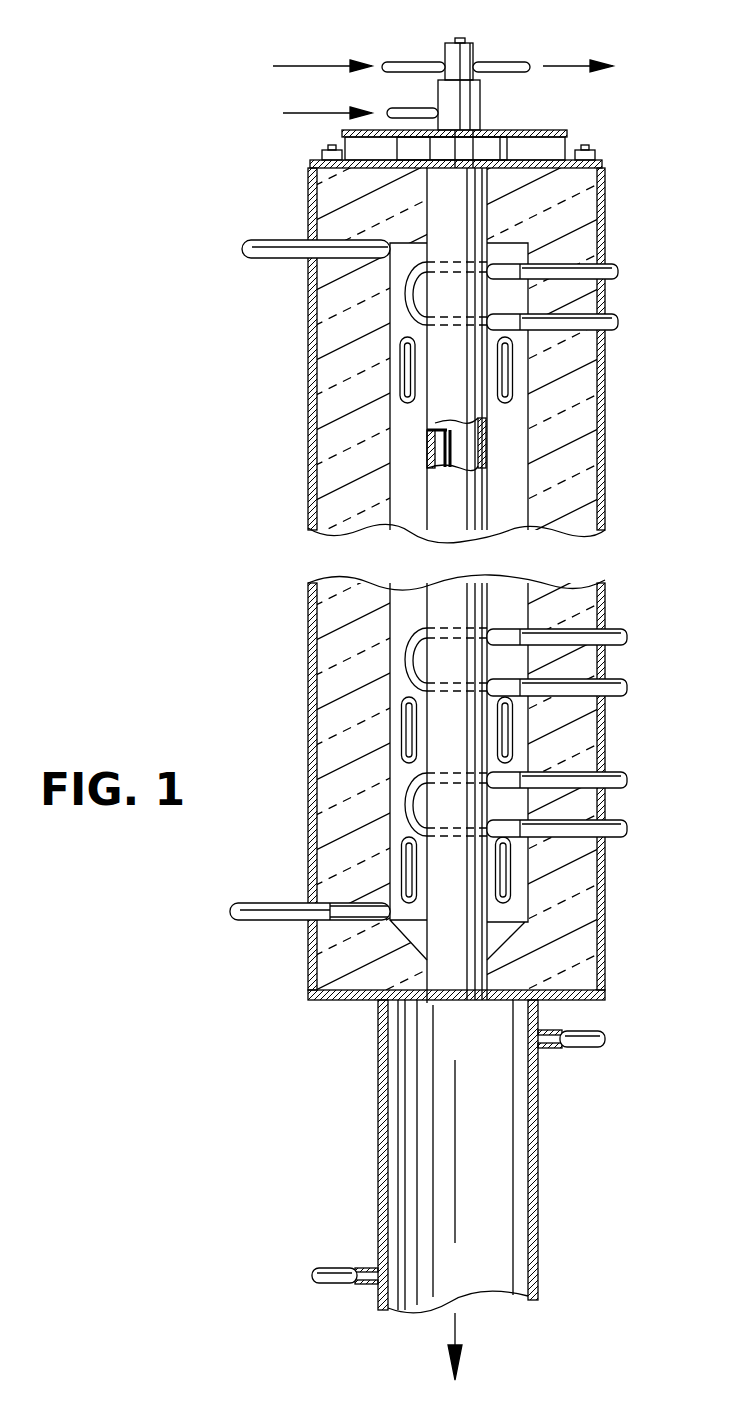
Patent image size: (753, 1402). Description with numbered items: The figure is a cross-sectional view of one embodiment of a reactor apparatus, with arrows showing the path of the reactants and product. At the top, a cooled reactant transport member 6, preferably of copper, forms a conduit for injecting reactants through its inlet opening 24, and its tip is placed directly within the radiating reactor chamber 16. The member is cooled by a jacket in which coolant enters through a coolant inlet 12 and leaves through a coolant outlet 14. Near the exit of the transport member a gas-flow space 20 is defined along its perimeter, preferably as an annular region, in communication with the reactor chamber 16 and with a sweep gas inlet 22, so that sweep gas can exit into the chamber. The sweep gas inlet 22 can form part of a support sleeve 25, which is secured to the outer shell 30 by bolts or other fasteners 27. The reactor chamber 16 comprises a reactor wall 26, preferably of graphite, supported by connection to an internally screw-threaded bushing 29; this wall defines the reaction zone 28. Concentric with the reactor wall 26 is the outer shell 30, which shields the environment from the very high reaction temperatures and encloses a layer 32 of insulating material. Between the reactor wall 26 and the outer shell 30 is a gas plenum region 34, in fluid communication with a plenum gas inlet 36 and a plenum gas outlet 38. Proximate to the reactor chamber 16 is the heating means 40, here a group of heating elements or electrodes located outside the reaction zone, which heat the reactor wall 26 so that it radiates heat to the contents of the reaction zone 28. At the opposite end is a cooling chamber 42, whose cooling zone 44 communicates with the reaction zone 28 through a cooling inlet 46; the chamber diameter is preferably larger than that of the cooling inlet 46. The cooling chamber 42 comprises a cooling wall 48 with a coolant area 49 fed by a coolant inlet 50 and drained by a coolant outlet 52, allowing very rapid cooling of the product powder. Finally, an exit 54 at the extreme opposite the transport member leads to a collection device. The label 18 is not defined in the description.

The reactant transport member 6 is at (455, 40).
The inlet opening 24 is at (465, 42).
The coolant inlet 12 is at (397, 60).
The coolant outlet 14 is at (517, 62).
The sweep gas inlet 22 is at (407, 108).
The internally screw-threaded bushing 29 is at (397, 153).
The support sleeve 25 is at (483, 147).
The fasteners 27 is at (325, 150).
The plenum gas outlet 38 is at (258, 243).
The gas-flow space 20 is at (390, 268).
The heater block 18 is at (532, 245).
The heating means 40 is at (617, 272).
The gas plenum region 34 is at (393, 330).
The outer shell 30 is at (308, 440).
The layer of insulating material 32 is at (583, 463).
The reactor chamber 16 is at (500, 432).
The reactor wall 26 is at (485, 455).
The reaction zone 28 is at (460, 462).
The plenum gas inlet 36 is at (263, 920).
The cooling inlet 46 is at (448, 1002).
The coolant area 49 is at (392, 1052).
The cooling wall 48 is at (537, 1163).
The cooling zone 44 is at (468, 1163).
The cooling chamber 42 is at (465, 1226).
The coolant outlet 52 is at (577, 1052).
The coolant inlet 50 is at (333, 1283).
The exit 54 is at (460, 1337).